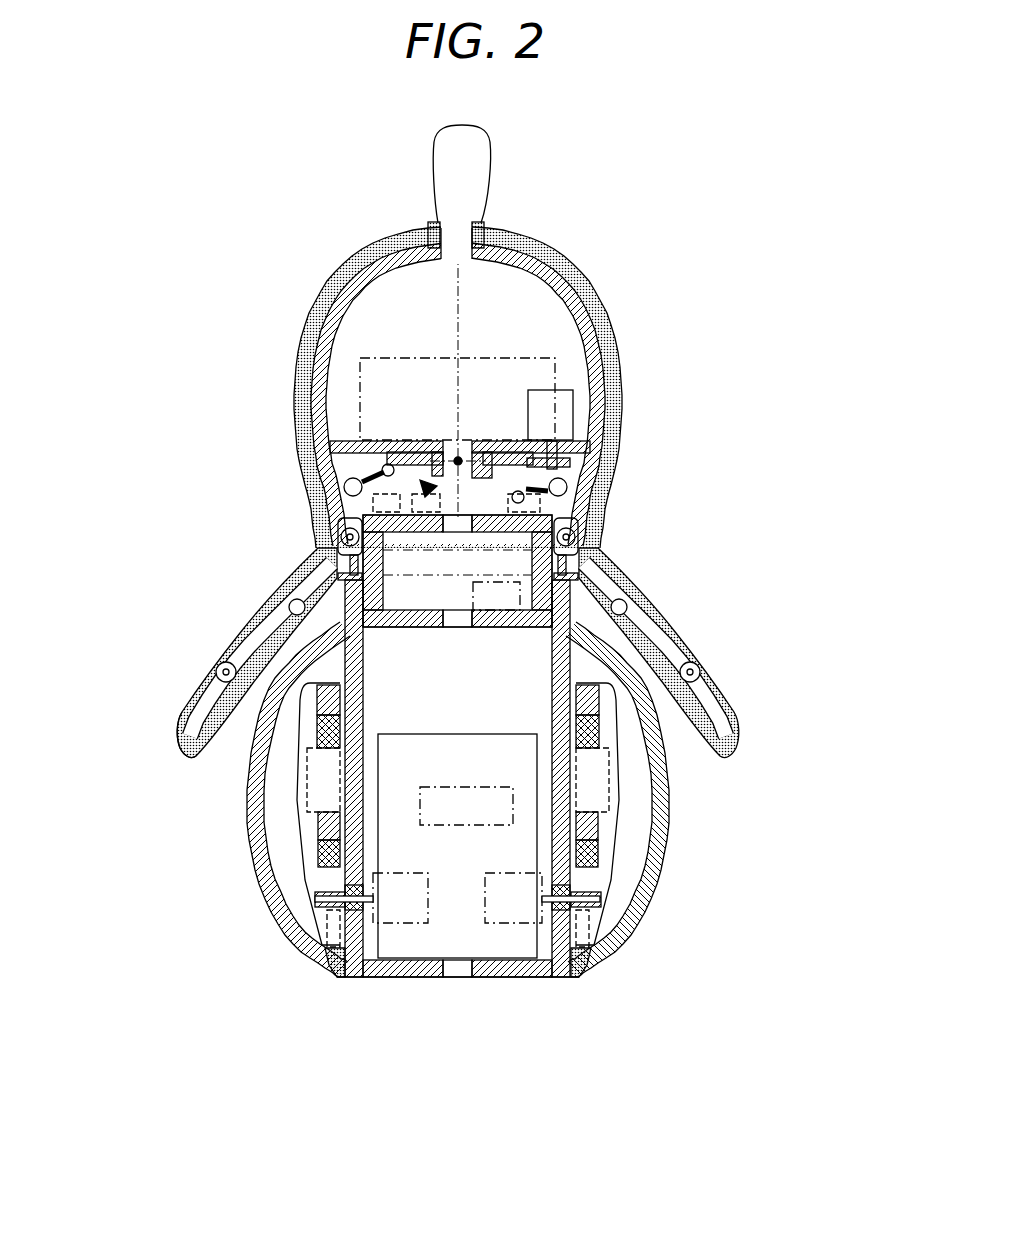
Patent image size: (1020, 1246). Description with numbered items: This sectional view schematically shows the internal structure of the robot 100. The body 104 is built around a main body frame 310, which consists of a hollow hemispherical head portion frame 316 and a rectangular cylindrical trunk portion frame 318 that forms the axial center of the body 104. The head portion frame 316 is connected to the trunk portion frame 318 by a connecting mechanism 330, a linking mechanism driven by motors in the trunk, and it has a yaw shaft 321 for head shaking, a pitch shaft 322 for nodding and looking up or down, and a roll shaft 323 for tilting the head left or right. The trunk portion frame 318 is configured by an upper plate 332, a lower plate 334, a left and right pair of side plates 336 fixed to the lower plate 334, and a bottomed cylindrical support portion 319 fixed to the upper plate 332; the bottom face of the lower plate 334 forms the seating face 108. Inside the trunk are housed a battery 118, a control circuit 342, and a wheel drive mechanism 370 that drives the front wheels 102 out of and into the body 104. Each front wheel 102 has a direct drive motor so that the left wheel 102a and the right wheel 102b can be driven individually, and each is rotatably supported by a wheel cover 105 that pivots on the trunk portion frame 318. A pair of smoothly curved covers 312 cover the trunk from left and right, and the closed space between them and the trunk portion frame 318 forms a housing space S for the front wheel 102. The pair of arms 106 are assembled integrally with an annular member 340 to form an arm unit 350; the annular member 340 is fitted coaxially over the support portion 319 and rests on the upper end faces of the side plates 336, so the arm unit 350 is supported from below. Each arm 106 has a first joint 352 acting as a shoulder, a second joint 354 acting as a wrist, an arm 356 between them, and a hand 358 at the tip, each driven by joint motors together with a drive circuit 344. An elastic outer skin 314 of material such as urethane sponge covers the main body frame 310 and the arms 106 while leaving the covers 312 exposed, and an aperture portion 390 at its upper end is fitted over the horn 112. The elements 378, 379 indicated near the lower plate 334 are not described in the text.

The robot 100 is at (482, 1167).
The front wheels 102 is at (494, 815).
The left wheel 102a is at (725, 815).
The right wheel 102b is at (313, 742).
The body 104 is at (804, 408).
The wheel cover 105 is at (617, 723).
The arm 106 is at (217, 653).
The seating face 108 is at (433, 978).
The horn 112 is at (438, 176).
The battery 118 is at (538, 777).
The main body frame 310 is at (749, 400).
The cover 312 is at (657, 882).
The outer skin 314 is at (627, 580).
The head portion frame 316 is at (603, 410).
The trunk portion frame 318 is at (600, 587).
The support portion 319 is at (343, 558).
The yaw shaft 321 is at (457, 378).
The pitch shaft 322 is at (335, 442).
The roll shaft 323 is at (447, 434).
The connecting mechanism 330 is at (328, 471).
The upper plate 332 is at (343, 583).
The lower plate 334 is at (507, 978).
The side plates 336 is at (571, 680).
The annular member 340 is at (311, 546).
The control circuit 342 is at (513, 813).
The drive circuit 344 is at (582, 545).
The arm unit 350 is at (312, 552).
The first joint 352 is at (322, 522).
The second joint 354 is at (222, 664).
The arm 356 is at (243, 650).
The hand 358 is at (193, 694).
The wheel drive mechanism 370 is at (350, 878).
The frame foot 378 is at (327, 948).
The bottom plate left 379 is at (388, 958).
The aperture portion 390 is at (430, 224).
The housing space S is at (633, 852).